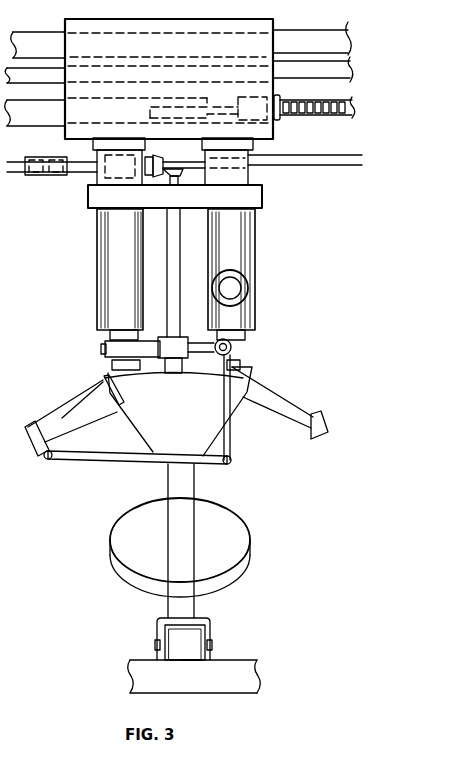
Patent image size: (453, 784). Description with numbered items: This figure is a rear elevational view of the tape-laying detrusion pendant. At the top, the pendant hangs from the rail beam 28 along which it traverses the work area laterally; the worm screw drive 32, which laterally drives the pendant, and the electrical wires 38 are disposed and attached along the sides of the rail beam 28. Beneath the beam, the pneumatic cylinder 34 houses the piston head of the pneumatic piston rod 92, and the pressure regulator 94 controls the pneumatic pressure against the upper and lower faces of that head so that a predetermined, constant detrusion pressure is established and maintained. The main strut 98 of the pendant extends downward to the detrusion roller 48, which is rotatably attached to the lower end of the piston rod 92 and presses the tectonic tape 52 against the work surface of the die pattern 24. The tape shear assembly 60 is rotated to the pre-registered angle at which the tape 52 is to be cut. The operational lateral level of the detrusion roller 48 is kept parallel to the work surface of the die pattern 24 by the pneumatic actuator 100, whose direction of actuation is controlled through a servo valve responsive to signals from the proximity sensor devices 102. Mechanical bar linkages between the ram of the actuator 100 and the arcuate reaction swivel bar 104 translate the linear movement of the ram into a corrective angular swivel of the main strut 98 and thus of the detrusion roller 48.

The rail beam 28 is at (318, 38).
The electrical wires 38 is at (342, 68).
The worm screw drive 32 is at (295, 114).
The pneumatic cylinder 34 is at (228, 224).
The pressure regulator 94 is at (245, 288).
The pneumatic piston rod 92 is at (245, 341).
The pneumatic actuator 100 is at (104, 349).
The arcuate reaction swivel bar 104 is at (63, 417).
The main strut 98 is at (194, 492).
The tape shear assembly 60 is at (227, 550).
The detrusion roller 48 is at (192, 637).
The proximity sensor devices 102 is at (157, 645).
The tectonic tape 52 is at (192, 660).
The die pattern 24 is at (170, 685).